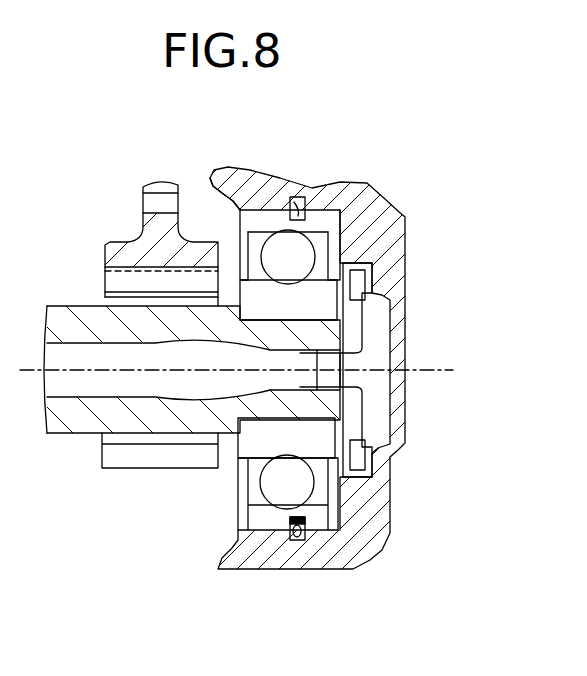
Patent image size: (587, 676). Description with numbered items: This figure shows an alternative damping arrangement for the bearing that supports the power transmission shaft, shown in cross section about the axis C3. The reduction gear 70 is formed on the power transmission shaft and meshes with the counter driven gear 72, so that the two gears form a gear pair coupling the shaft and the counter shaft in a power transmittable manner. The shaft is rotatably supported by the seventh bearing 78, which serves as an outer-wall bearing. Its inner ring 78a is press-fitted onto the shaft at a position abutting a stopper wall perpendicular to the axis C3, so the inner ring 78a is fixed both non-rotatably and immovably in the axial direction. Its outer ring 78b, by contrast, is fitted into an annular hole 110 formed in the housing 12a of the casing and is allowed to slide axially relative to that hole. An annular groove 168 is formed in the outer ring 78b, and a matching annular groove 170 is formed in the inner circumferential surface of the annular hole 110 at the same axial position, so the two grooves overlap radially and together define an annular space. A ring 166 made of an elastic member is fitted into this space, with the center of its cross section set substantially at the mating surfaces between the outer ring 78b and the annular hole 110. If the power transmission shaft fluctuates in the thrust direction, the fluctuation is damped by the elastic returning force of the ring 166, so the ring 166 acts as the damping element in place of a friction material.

The reduction gear 70 is at (118, 460).
The counter driven gear 72 is at (143, 277).
The seventh bearing 78 is at (248, 523).
The inner ring 78a is at (240, 443).
The outer ring 78b is at (245, 522).
The annular hole 110 is at (237, 222).
The ring 166 is at (297, 207).
The annular groove 168 is at (307, 208).
The annular groove 170 is at (305, 535).
The housing 12a is at (372, 540).
The axis C3 is at (437, 368).